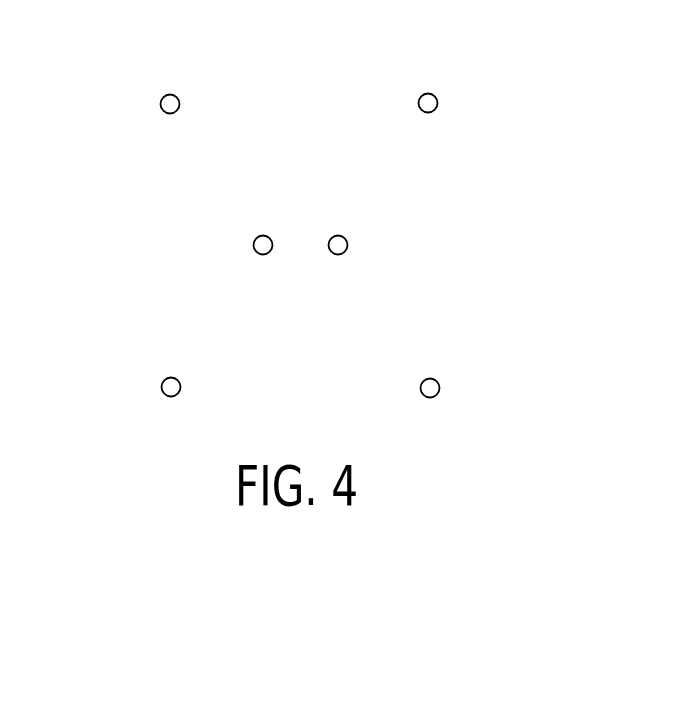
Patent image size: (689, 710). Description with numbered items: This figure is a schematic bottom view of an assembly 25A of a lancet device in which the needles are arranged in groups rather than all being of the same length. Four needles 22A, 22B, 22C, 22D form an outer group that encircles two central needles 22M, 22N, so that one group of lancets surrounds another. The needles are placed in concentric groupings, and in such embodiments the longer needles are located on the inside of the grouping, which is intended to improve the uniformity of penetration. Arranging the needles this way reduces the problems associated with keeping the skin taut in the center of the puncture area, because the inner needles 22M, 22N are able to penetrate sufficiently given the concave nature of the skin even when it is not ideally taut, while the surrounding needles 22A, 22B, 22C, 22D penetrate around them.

The assembly 25A is at (483, 48).
The needle 22A is at (162, 95).
The needle 22B is at (421, 95).
The needle 22C is at (163, 379).
The needle 22D is at (422, 380).
The central needle 22M is at (346, 237).
The central needle 22N is at (256, 237).